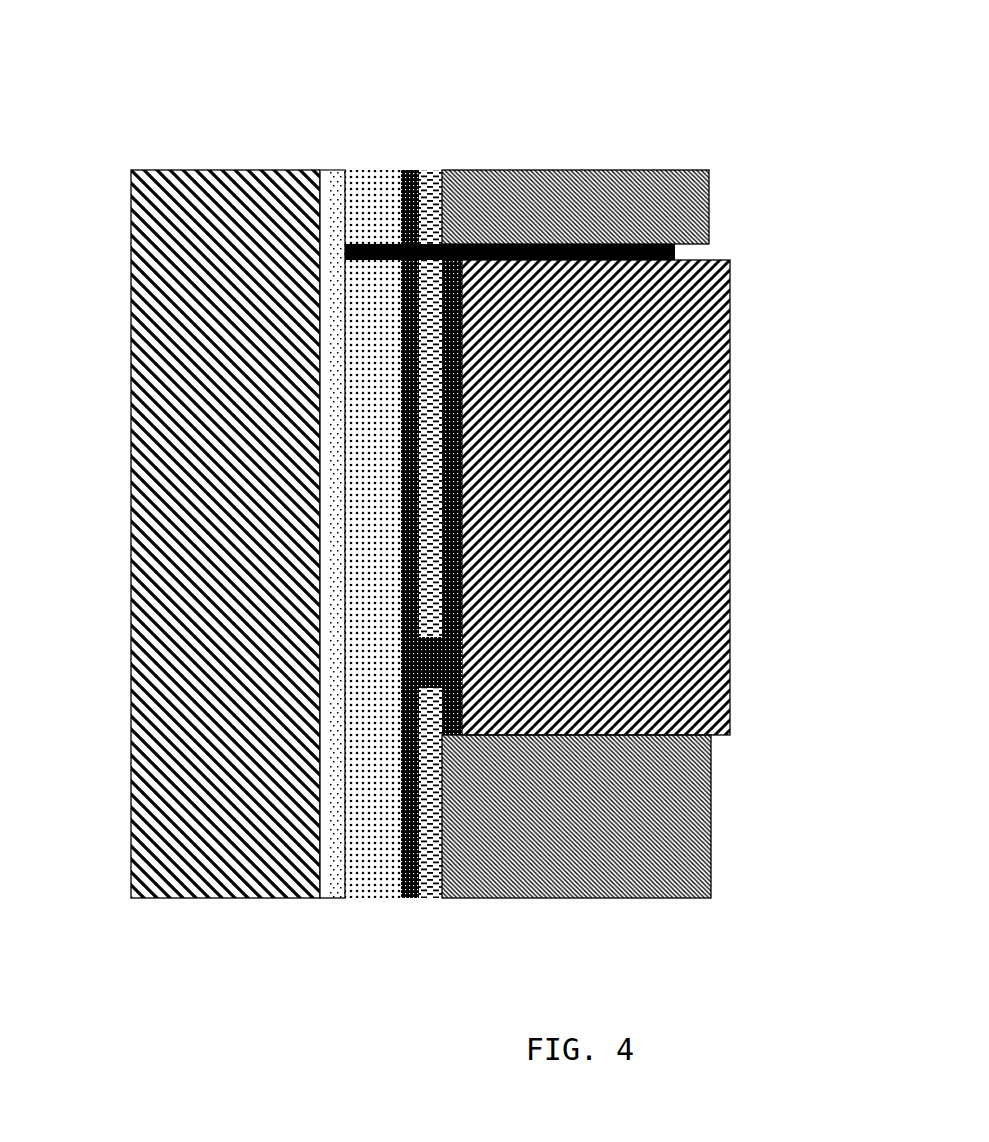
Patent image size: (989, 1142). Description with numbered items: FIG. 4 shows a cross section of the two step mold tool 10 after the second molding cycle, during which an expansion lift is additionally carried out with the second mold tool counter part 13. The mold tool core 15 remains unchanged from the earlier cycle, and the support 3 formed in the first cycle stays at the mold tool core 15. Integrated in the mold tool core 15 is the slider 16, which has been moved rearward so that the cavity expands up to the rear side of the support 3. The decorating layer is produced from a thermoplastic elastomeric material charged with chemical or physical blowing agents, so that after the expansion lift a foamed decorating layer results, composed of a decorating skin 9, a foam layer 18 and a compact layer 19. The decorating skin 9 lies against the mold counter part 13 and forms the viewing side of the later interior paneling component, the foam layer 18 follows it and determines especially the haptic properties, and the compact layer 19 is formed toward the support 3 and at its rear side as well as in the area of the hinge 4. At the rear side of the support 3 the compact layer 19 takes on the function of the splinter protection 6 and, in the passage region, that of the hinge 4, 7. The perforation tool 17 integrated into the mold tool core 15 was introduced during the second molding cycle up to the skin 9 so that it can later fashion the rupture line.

The two step mold tool 10 is at (170, 131).
The second mold tool counter part 13 is at (182, 680).
The decorating skin 9 is at (331, 222).
The foam layer 18 is at (363, 195).
The compact layer 19 is at (407, 182).
The support 3 is at (430, 202).
The mold tool core 15 is at (625, 187).
The perforation tool 17 is at (500, 240).
The slider 16 is at (677, 531).
The splinter protection 6 is at (452, 390).
The hinge 4 is at (515, 820).
The via 7 is at (436, 668).